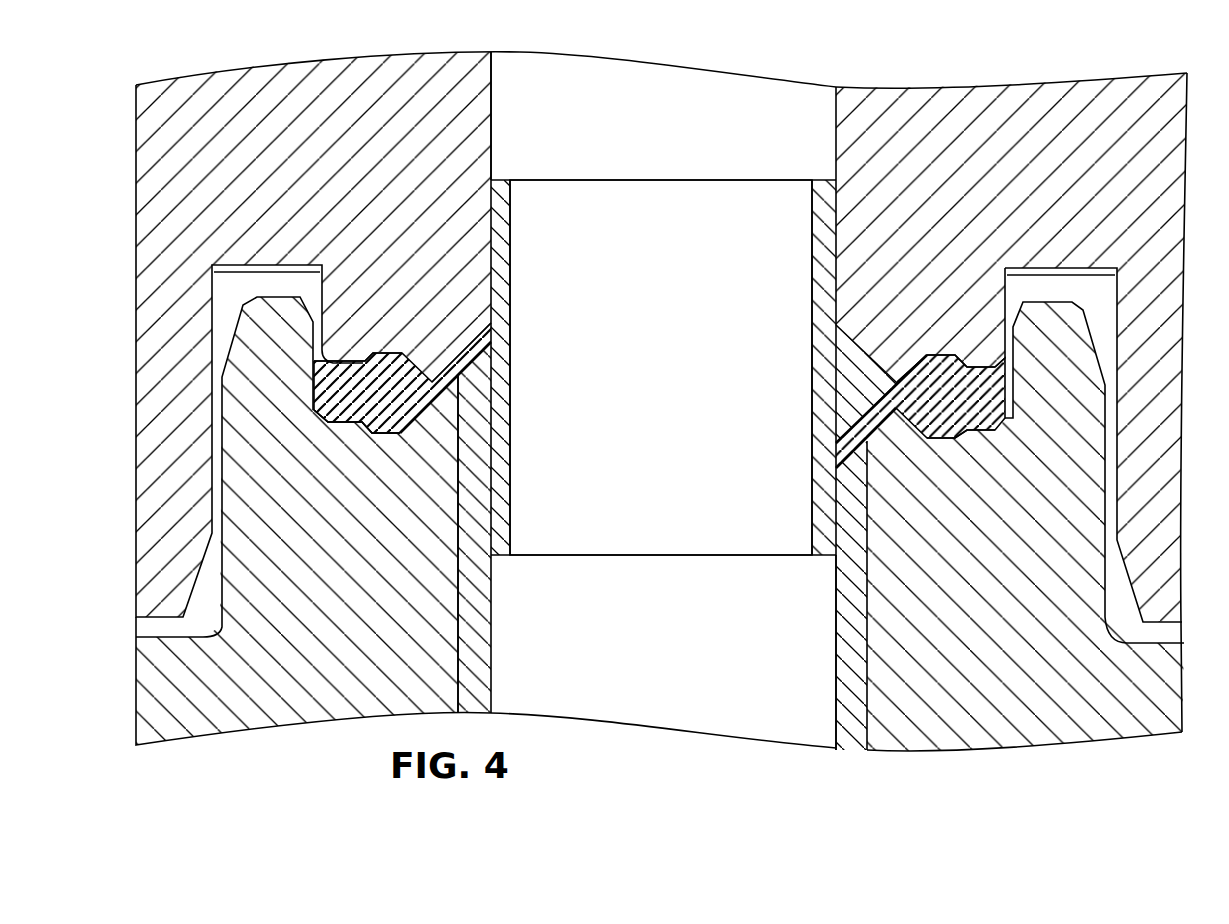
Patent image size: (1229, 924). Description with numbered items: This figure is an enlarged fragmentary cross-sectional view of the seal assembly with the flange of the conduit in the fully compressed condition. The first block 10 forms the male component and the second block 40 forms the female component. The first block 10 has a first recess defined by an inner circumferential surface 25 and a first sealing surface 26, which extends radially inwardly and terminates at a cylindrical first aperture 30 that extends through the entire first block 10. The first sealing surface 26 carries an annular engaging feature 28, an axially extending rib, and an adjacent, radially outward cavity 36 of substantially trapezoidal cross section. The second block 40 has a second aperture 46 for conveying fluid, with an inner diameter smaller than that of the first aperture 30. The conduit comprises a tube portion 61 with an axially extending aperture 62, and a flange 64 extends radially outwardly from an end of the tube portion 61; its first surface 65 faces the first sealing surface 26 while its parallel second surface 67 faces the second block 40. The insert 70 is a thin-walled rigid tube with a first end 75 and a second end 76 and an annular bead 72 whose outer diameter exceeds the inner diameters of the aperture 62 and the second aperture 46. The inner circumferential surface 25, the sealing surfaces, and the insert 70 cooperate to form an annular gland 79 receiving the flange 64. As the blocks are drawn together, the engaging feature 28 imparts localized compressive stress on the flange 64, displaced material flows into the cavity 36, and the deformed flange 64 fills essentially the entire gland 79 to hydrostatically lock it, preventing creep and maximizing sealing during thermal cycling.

The first block 10 is at (423, 570).
The inner circumferential surface 25 is at (1017, 388).
The first sealing surface 26 is at (370, 412).
The engaging feature 28 is at (429, 398).
The first aperture 30 is at (846, 702).
The cavity 36 is at (387, 425).
The second block 40 is at (891, 260).
The second aperture 46 is at (492, 88).
The tube portion 61 is at (478, 580).
The aperture 62 is at (835, 628).
The flange 64 is at (908, 372).
The first surface 65 is at (880, 436).
The second surface 67 is at (462, 338).
The insert 70 is at (708, 178).
The annular bead 72 is at (843, 370).
The first end 75 is at (693, 558).
The second end 76 is at (693, 178).
The annular gland 79 is at (344, 426).